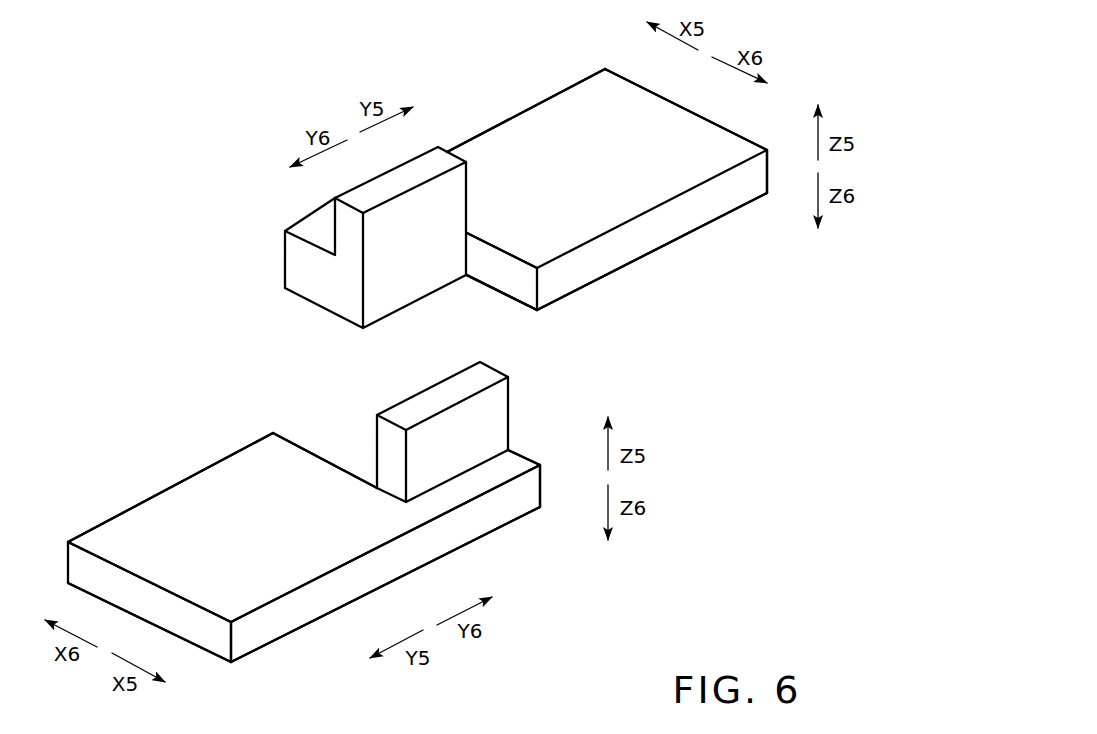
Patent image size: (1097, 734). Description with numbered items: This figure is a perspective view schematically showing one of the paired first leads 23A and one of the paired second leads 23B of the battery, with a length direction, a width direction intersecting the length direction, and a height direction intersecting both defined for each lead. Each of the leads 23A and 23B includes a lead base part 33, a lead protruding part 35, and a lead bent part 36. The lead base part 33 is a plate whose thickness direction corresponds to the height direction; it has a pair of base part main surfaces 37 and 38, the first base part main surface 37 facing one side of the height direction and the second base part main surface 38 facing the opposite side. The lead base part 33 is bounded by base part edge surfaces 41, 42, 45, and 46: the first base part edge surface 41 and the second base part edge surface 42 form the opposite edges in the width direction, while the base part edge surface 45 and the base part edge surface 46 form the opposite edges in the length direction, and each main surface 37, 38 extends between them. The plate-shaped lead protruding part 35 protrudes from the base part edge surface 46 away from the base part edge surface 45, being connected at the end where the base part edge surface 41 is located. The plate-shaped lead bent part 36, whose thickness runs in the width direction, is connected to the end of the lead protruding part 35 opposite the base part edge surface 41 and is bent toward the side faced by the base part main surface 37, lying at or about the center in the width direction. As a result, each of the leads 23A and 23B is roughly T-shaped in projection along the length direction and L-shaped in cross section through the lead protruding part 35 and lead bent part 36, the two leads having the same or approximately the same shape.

The lead (first lead) 23A is at (539, 70).
The lead (second lead) 23B is at (232, 431).
The lead base part 33 is at (660, 187).
The lead protruding part 35 is at (313, 230).
The lead bent part 36 is at (428, 166).
The base part main surface (first base part main surface) 37 is at (615, 92).
The base part main surface (second base part main surface) 38 is at (727, 213).
The base part edge surface (first base part edge surface) 41 is at (517, 112).
The base part edge surface (second base part edge surface) 42 is at (618, 257).
The base part edge surface 45 is at (720, 125).
The base part edge surface 46 is at (505, 278).